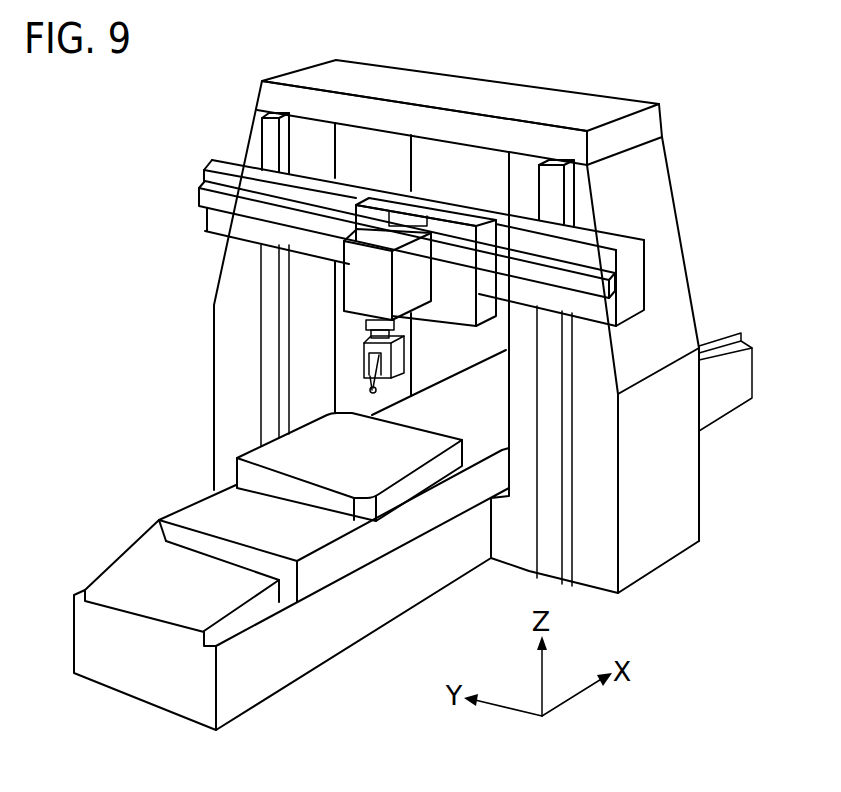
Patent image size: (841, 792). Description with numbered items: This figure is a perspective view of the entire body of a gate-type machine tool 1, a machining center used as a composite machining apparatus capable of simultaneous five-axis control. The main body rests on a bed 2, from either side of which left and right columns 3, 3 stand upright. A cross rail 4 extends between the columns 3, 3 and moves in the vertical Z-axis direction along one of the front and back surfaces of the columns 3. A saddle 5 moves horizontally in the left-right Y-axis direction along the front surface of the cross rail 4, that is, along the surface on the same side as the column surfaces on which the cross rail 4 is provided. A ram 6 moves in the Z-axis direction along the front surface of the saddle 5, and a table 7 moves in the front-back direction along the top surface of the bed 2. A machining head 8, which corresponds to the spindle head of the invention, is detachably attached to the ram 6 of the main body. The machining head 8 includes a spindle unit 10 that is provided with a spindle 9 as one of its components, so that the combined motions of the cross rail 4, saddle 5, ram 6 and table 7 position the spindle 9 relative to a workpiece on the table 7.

The machine tool 1 is at (459, 86).
The bed 2 is at (291, 589).
The columns 3 is at (462, 337).
The cross rail 4 is at (419, 208).
The saddle 5 is at (426, 181).
The ram 6 is at (387, 175).
The table 7 is at (318, 461).
The machining head 8 is at (420, 356).
The spindle 9 is at (406, 373).
The spindle unit 10 is at (410, 354).